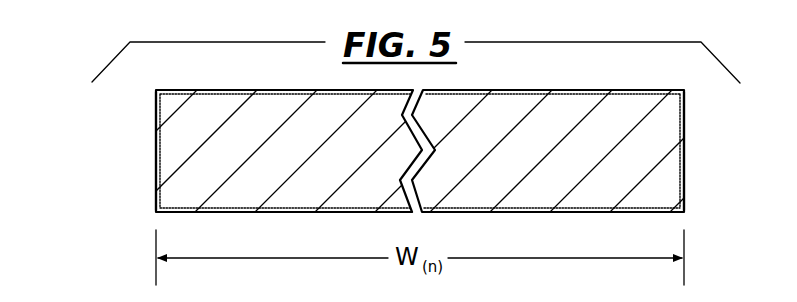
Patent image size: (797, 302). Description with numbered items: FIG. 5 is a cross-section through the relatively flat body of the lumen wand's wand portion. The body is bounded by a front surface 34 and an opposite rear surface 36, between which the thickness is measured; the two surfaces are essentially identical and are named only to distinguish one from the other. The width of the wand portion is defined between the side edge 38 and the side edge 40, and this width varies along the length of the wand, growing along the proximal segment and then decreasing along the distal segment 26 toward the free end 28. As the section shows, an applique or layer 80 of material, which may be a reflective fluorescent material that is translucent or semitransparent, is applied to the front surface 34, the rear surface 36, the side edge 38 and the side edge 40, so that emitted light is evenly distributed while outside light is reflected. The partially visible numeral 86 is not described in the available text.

The front surface 34 is at (611, 89).
The rear surface 36 is at (217, 215).
The side edge 38 is at (154, 153).
The side edge 40 is at (689, 125).
The applique layer 80 is at (157, 118).
The free end 28 is at (52, 297).
The component (partially visible) 86 is at (139, 297).
The distal segment 26 is at (334, 297).